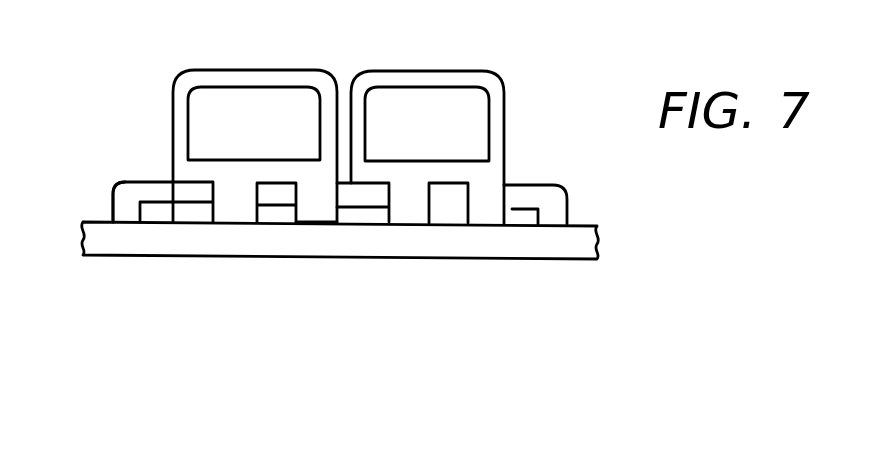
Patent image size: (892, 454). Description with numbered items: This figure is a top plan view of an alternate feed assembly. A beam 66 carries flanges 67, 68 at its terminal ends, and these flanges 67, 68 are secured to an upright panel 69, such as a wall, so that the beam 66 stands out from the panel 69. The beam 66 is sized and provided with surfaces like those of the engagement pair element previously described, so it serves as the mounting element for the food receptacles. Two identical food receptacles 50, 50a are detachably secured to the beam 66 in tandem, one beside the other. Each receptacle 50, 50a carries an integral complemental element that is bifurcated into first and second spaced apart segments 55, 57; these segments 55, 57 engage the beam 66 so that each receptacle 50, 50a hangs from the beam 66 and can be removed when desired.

The food receptacle 50 is at (236, 70).
The food receptacle 50a is at (427, 71).
The first segment 55 is at (313, 224).
The second segment 57 is at (230, 256).
The beam 66 is at (152, 182).
The flange 67 is at (108, 208).
The flange 68 is at (567, 211).
The upright panel 69 is at (127, 256).